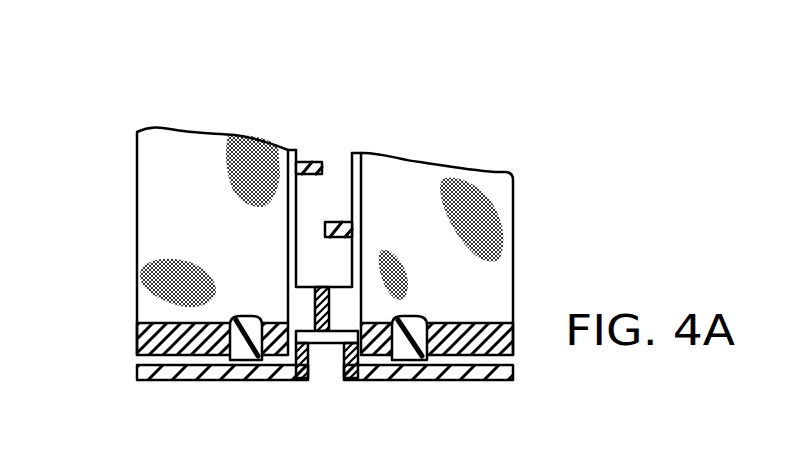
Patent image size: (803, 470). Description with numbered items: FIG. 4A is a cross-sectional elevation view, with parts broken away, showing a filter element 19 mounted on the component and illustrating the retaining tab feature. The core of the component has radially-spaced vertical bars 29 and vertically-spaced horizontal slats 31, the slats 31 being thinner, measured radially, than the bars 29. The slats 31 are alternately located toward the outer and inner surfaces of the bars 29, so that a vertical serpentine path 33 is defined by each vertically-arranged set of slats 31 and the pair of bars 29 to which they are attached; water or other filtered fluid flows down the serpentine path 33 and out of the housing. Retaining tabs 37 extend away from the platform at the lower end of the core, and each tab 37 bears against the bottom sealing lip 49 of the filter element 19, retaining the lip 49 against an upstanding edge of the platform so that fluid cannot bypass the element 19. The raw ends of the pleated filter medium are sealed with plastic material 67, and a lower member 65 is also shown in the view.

The filter element 19 is at (160, 168).
The vertical bars 29 is at (345, 165).
The horizontal slats 31 is at (303, 157).
The vertical serpentine path 33 is at (325, 268).
The retaining tab 37 is at (248, 318).
The bottom sealing lip 49 is at (300, 345).
The circuit board 65 is at (420, 360).
The plastic material 67 is at (137, 338).